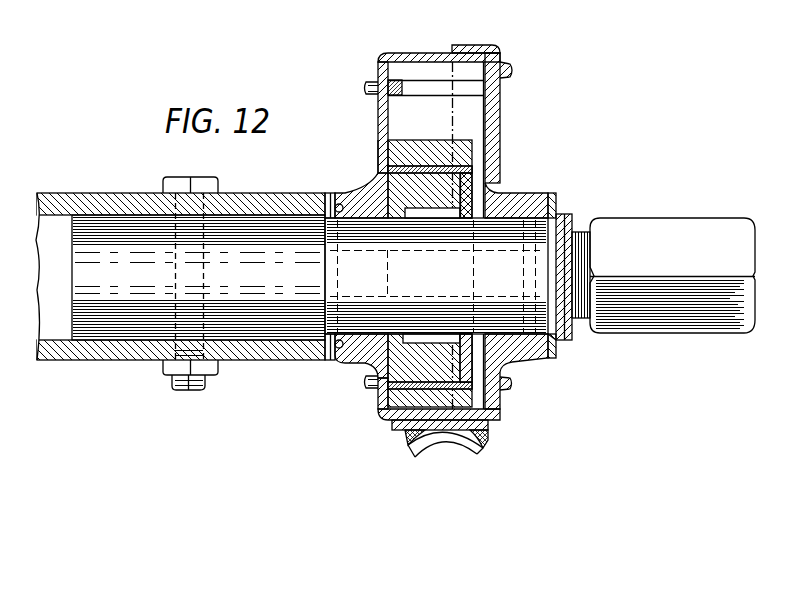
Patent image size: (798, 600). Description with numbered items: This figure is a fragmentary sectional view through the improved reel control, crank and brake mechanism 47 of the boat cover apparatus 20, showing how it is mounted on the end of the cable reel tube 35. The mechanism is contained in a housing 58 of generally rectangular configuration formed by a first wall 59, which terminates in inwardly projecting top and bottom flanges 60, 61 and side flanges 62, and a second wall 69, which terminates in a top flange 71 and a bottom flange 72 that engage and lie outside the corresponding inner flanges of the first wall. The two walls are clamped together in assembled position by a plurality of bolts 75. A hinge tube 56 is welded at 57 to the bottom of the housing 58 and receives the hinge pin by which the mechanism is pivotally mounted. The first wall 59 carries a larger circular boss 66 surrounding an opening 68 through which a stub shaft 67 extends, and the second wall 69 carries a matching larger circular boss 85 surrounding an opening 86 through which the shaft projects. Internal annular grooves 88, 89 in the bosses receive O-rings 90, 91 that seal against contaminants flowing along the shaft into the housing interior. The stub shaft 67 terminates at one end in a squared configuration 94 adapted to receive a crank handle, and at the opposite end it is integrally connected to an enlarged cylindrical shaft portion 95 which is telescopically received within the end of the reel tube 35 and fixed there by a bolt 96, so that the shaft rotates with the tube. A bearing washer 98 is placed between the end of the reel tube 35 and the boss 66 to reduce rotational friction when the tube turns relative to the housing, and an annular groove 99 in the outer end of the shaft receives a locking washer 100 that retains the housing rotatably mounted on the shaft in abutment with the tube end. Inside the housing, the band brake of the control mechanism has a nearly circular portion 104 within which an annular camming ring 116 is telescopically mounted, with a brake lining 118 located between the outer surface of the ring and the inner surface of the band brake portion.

The implement 20 is at (9, 123).
The reel tube 35 is at (78, 205).
The reel control, crank and brake mechanism 47 is at (519, 133).
The hinge tube 56 is at (485, 452).
The weld 57 is at (489, 435).
The housing 58 is at (368, 150).
The first wall 59 is at (378, 125).
The top flange 60 is at (442, 53).
The bottom flange 61 is at (498, 414).
The side flanges 62 is at (388, 63).
The circular boss 66 is at (362, 197).
The stub shaft 67 is at (435, 276).
The opening 68 is at (369, 333).
The second wall 69 is at (500, 110).
The top flange 71 is at (466, 45).
The bottom flange 72 is at (396, 428).
The bolts 75 is at (510, 75).
The circular boss 85 is at (520, 190).
The opening 86 is at (565, 222).
The annular groove 88 is at (339, 349).
The annular groove 89 is at (550, 197).
The O-ring 90 is at (328, 345).
The O-ring 91 is at (550, 350).
The squared configuration 94 is at (720, 230).
The enlarged cylindrical shaft portion 95 is at (108, 330).
The bolt 96 is at (182, 393).
The bearing washer 98 is at (330, 218).
The annular groove 99 is at (577, 262).
The locking washer 100 is at (556, 338).
The nearly circular portion 104 is at (422, 148).
The camming ring 116 is at (466, 178).
The brake lining 118 is at (383, 409).